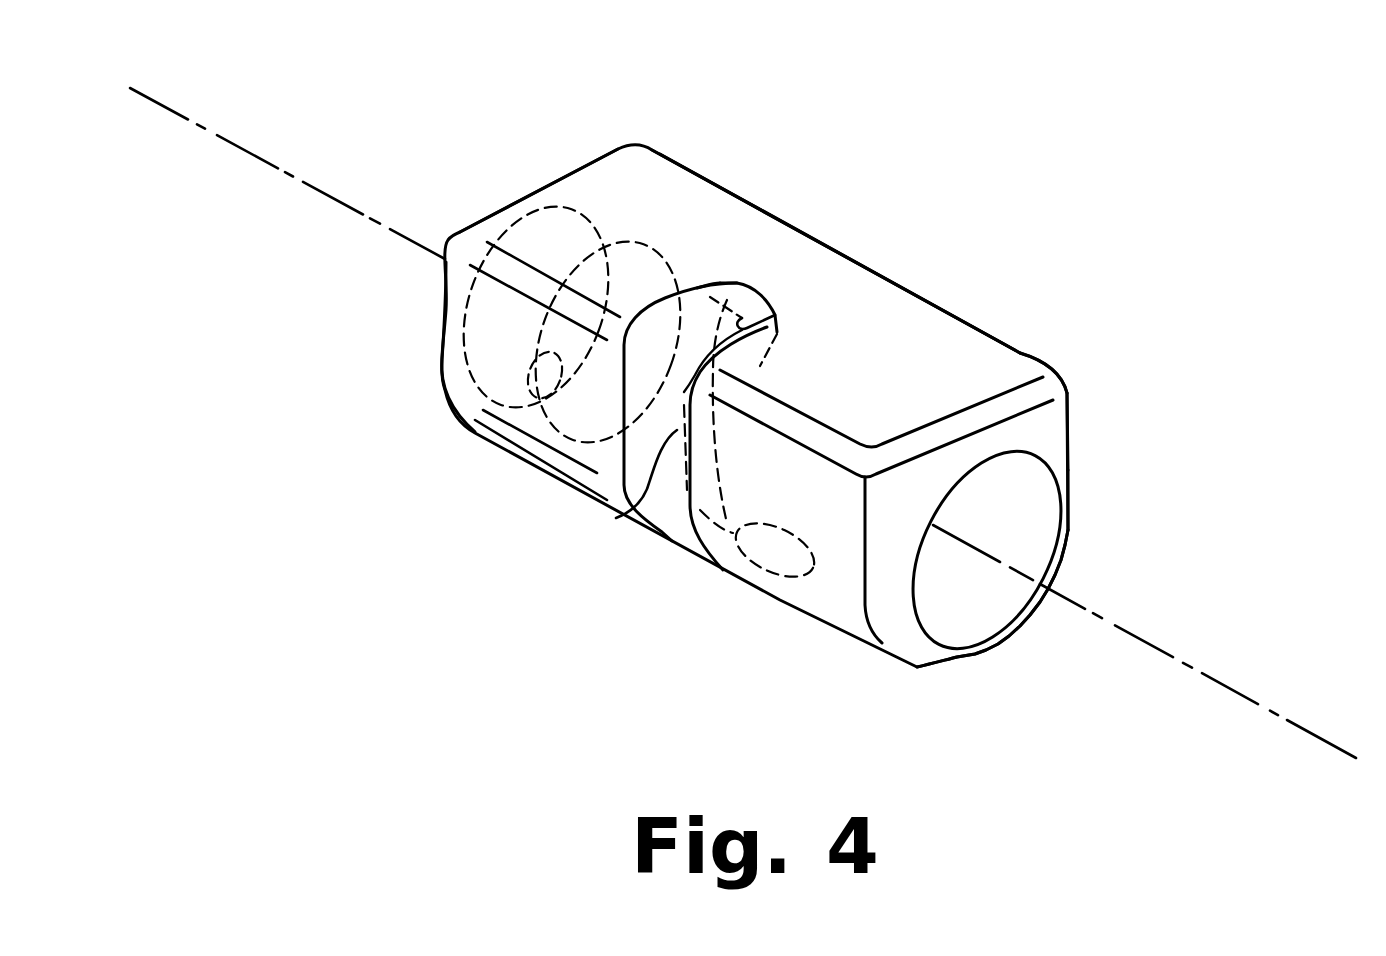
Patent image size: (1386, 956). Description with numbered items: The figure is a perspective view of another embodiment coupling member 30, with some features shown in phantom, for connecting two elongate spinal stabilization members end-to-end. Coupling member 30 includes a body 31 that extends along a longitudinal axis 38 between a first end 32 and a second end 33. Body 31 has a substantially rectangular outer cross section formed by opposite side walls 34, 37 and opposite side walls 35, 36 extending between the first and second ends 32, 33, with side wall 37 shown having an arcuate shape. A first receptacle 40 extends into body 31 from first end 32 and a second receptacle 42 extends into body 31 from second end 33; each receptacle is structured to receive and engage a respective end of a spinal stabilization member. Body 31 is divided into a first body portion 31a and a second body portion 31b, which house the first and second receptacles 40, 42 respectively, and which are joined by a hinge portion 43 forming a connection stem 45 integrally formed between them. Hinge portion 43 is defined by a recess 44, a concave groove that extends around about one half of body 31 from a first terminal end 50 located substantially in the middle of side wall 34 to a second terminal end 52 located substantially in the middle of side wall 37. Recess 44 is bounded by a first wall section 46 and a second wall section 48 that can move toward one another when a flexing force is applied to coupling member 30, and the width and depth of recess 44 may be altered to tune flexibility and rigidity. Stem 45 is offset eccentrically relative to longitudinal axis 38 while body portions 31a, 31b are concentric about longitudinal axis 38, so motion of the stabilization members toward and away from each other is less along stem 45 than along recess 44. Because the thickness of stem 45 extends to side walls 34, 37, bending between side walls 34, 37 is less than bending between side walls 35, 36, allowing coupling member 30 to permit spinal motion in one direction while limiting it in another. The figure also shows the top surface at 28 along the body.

The coupling member 30 is at (940, 104).
The body 31 is at (744, 192).
The first body portion 31a is at (907, 307).
The second body portion 31b is at (646, 155).
The top surface 28 is at (830, 257).
The second end 33 is at (627, 148).
The side wall 34 is at (1021, 366).
The first end 32 is at (1035, 427).
The side wall 35 is at (1067, 455).
The side wall 36 is at (843, 583).
The side wall 37 is at (985, 654).
The longitudinal axis 38 is at (1222, 690).
The first receptacle 40 is at (943, 612).
The second receptacle 42 is at (500, 440).
The hinge portion 43 is at (652, 546).
The recess 44 is at (678, 533).
The connection stem 45 is at (620, 512).
The first wall section 46 is at (762, 346).
The second wall section 48 is at (690, 292).
The first terminal end 50 is at (755, 287).
The second terminal end 52 is at (790, 600).